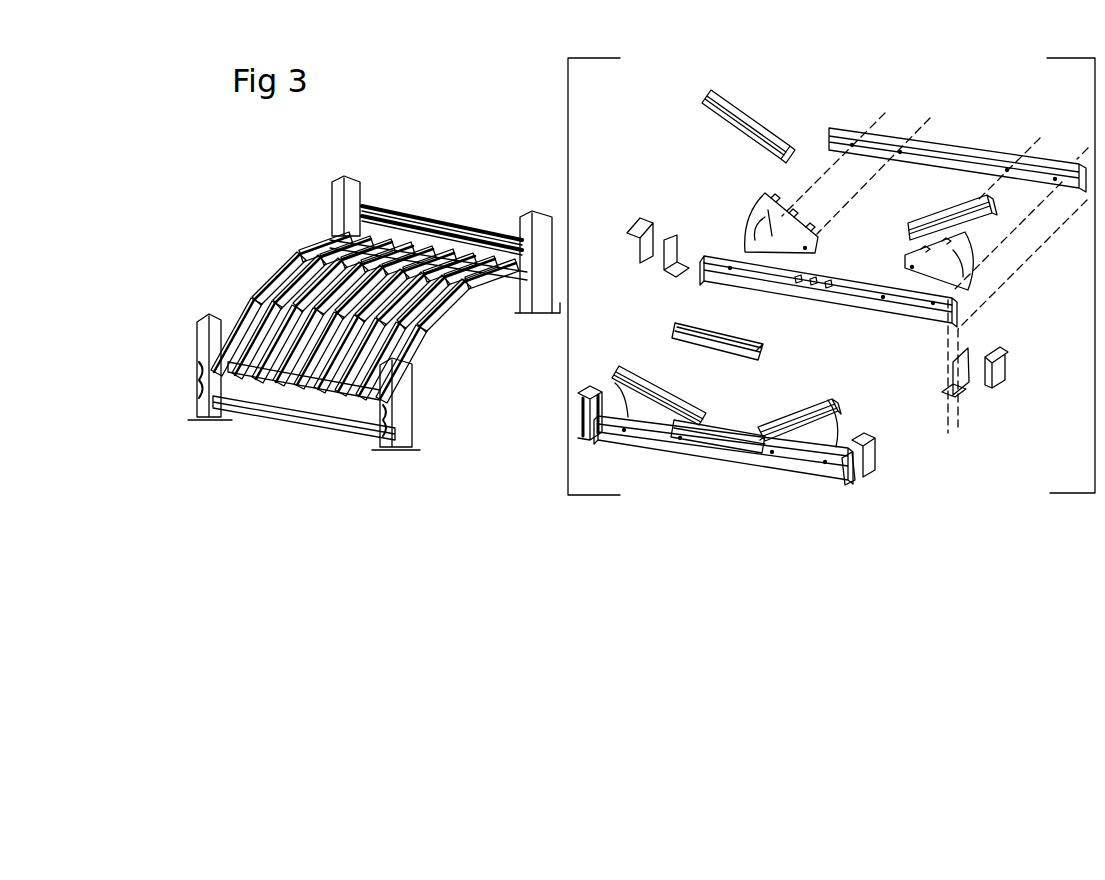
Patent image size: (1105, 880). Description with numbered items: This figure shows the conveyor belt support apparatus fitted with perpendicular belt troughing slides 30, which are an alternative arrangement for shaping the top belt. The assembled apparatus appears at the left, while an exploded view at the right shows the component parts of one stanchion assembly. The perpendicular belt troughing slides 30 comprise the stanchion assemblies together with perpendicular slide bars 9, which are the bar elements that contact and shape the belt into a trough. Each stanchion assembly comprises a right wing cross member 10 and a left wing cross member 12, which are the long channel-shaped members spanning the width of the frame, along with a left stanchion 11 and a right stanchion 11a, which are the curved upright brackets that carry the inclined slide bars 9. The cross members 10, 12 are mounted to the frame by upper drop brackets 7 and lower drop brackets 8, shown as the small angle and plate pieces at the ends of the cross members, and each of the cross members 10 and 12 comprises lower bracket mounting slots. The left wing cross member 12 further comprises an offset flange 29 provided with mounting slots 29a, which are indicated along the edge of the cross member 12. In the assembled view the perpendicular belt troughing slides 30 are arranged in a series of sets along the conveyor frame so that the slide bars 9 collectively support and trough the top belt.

The upper drop brackets 7 is at (645, 220).
The lower drop brackets 8 is at (664, 273).
The perpendicular slide bars 9 is at (716, 97).
The right wing cross member 10 is at (975, 152).
The left stanchion 11 is at (756, 214).
The right stanchion 11a is at (922, 260).
The left wing cross member 12 is at (742, 277).
The offset flange 29 is at (858, 288).
The mounting slots 29a is at (829, 287).
The perpendicular belt troughing slides 30 is at (565, 377).